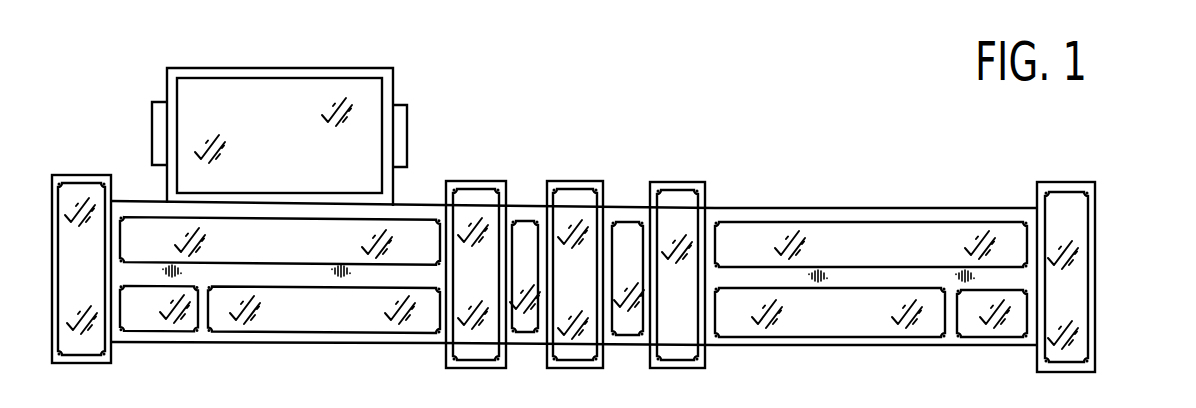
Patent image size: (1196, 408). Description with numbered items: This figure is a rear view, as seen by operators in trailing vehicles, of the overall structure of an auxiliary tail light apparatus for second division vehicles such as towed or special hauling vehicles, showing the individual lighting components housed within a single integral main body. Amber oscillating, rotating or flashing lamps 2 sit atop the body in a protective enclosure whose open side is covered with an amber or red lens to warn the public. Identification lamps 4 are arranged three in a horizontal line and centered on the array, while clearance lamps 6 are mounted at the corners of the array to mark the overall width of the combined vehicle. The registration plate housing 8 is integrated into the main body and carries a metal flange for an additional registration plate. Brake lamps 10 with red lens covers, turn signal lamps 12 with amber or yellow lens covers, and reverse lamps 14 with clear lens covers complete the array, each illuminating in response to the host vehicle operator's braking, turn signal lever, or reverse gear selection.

The amber oscillating, rotating or flashing lamps 2 is at (395, 237).
The identification lamps 4 is at (575, 212).
The clearance lamps 6 is at (1072, 228).
The registration plate housing 8 is at (367, 93).
The brake lamps 10 is at (277, 320).
The turn signal lamps 12 is at (145, 317).
The reverse lamps 14 is at (627, 330).